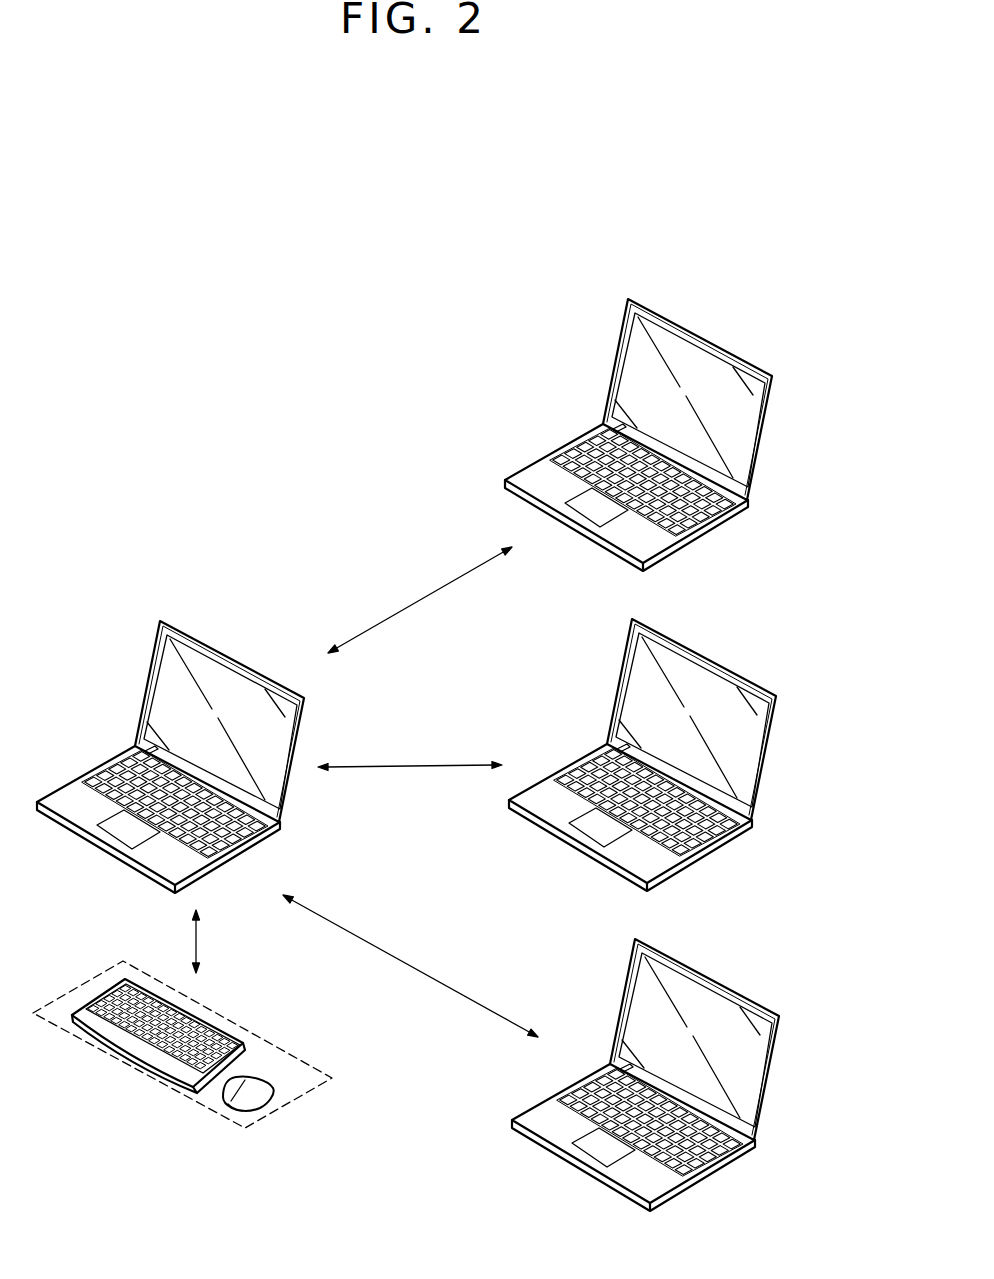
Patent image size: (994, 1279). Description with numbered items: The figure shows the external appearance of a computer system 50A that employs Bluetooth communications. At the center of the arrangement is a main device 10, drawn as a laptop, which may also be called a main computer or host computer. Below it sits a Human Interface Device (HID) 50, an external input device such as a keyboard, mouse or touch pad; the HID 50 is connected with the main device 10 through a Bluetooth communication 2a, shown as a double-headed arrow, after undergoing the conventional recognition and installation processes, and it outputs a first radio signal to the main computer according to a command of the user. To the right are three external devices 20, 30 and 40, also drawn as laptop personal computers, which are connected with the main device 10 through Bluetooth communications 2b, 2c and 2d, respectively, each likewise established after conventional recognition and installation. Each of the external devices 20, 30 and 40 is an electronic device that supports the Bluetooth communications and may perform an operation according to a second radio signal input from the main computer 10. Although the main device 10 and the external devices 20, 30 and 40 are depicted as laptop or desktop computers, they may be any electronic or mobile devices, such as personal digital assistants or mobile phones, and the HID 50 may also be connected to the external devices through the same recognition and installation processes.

The main device 10 is at (170, 744).
The external device 20 is at (638, 421).
The external device 30 is at (642, 742).
The external device 40 is at (645, 1062).
The Human Interface Device 50 is at (140, 1072).
The computer system 50A is at (300, 447).
The Bluetooth communication 2a is at (214, 941).
The Bluetooth communication 2b is at (420, 600).
The Bluetooth communication 2c is at (410, 755).
The Bluetooth communication 2d is at (410, 966).